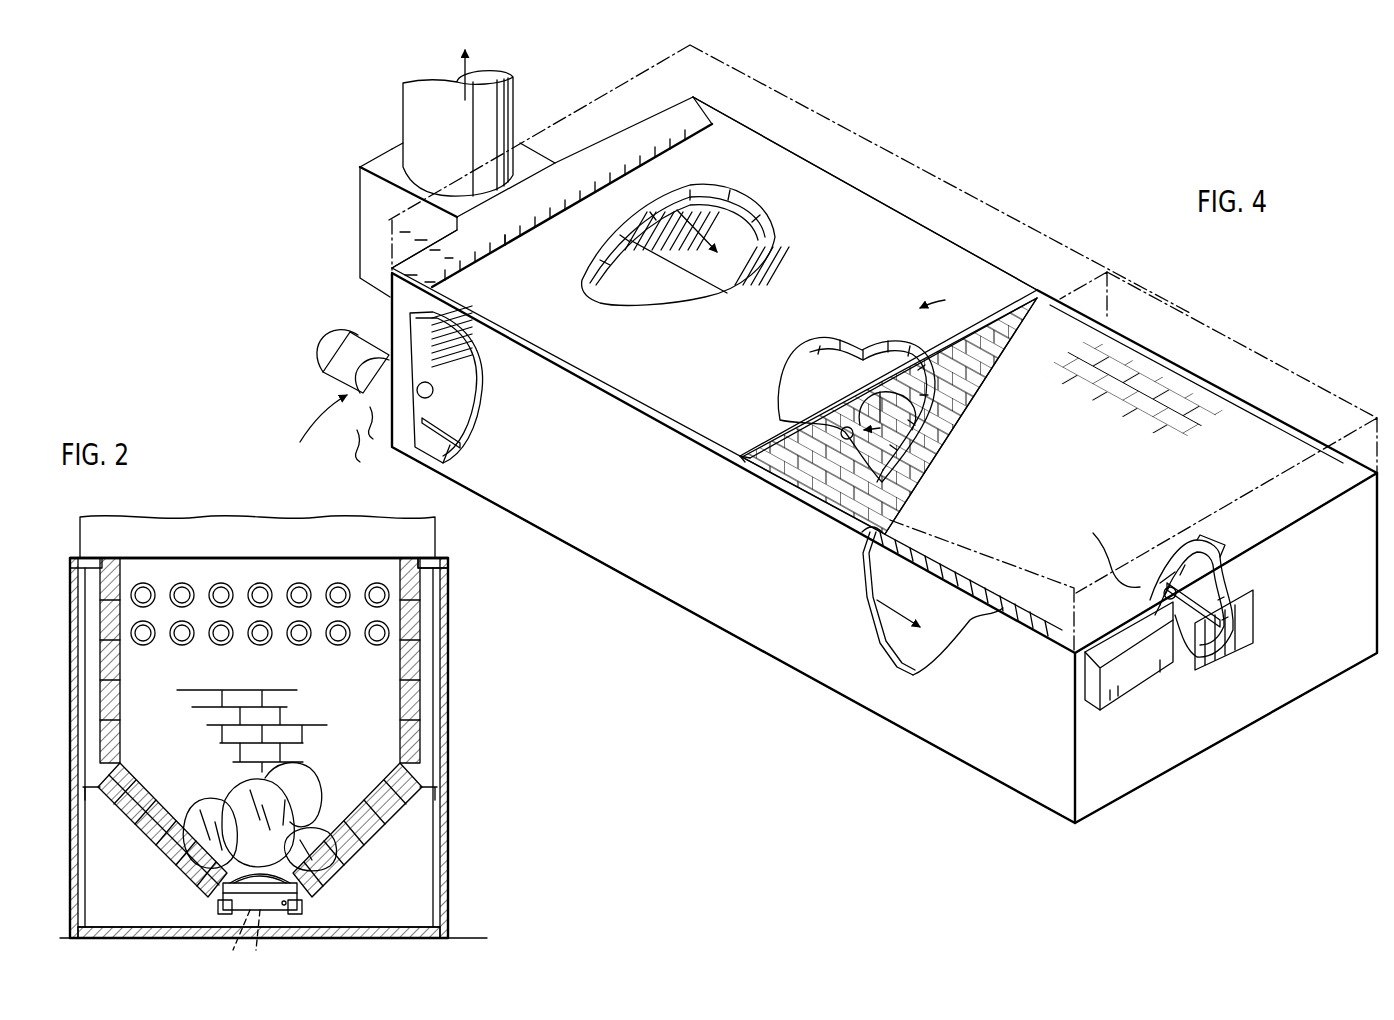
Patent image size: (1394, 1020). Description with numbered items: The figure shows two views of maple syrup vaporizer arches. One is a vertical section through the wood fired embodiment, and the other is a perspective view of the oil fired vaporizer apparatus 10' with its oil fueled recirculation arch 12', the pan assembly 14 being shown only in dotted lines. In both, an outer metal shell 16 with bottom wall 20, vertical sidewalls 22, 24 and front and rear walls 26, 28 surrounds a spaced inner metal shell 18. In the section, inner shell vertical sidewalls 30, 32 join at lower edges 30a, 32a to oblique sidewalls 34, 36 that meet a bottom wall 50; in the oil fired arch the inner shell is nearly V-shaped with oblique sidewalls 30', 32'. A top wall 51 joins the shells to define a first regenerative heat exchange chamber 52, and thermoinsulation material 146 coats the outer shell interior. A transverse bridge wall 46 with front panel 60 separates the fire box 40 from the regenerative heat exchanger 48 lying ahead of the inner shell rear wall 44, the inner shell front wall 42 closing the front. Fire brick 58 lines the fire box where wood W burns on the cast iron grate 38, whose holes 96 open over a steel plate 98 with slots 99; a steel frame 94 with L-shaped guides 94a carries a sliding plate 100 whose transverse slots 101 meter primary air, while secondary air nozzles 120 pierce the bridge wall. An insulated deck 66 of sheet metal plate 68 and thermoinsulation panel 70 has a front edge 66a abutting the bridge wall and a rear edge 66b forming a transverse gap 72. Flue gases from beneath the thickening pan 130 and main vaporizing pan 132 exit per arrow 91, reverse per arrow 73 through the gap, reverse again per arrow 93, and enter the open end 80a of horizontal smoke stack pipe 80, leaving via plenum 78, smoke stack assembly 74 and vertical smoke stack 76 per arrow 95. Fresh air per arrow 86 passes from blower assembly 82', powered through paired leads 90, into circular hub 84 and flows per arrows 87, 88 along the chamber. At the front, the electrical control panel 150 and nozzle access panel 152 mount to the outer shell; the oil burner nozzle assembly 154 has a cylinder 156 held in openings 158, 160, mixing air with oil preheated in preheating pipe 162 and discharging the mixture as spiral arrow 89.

In FIG. 4, the maple syrup vaporizer apparatus 10' is at (764, 496).
In FIG. 4, the oil fueled recirculation arch 12' is at (1226, 503).
In FIG. 2, the pan assembly 14 is at (200, 506).
In FIG. 4, the pan assembly 14 is at (1032, 224).
In FIG. 2, the outer metal shell 16 is at (466, 726).
In FIG. 2, the inner metal shell 18 is at (126, 833).
In FIG. 2, the bottom wall 20 is at (448, 932).
In FIG. 2, the vertical sidewall 22 is at (72, 640).
In FIG. 4, the vertical sidewall 22 is at (950, 743).
In FIG. 2, the vertical sidewall 24 is at (448, 672).
In FIG. 4, the vertical sidewall 24 is at (1378, 480).
In FIG. 4, the front wall 26 is at (1283, 680).
In FIG. 4, the rear wall 28 is at (452, 348).
In FIG. 2, the vertical sidewall 30 is at (83, 660).
In FIG. 2, the lower edge 30a is at (84, 789).
In FIG. 4, the oblique sidewall 30' is at (727, 452).
In FIG. 2, the vertical sidewall 32 is at (443, 660).
In FIG. 2, the lower edge 32a is at (440, 790).
In FIG. 4, the oblique sidewall 32' is at (1242, 349).
In FIG. 2, the oblique sidewall 34 is at (160, 845).
In FIG. 2, the oblique sidewall 36 is at (390, 815).
In FIG. 2, the cast iron grate 38 is at (315, 835).
In FIG. 2, the fire box 40 is at (322, 684).
In FIG. 4, the fire box 40 is at (1021, 474).
In FIG. 4, the inner shell front wall 42 is at (1222, 544).
In FIG. 4, the inner shell rear wall 44 is at (742, 119).
In FIG. 2, the bridge wall 46 is at (305, 555).
In FIG. 4, the bridge wall 46 is at (1044, 288).
In FIG. 4, the regenerative heat exchanger 48 is at (703, 280).
In FIG. 2, the bottom wall 50 is at (305, 900).
In FIG. 2, the top wall 51 is at (436, 563).
In FIG. 4, the top wall 51 is at (697, 112).
In FIG. 2, the first regenerative heat exchange chamber 52 is at (403, 869).
In FIG. 4, the first regenerative heat exchange chamber 52 is at (921, 612).
In FIG. 2, the fire brick 58 is at (122, 745).
In FIG. 4, the front panel 60 is at (1004, 292).
In FIG. 4, the insulated deck 66 is at (912, 244).
In FIG. 4, the front edge 66a is at (745, 452).
In FIG. 4, the rear edge 66b is at (524, 248).
In FIG. 4, the sheet metal plate 68 is at (776, 246).
In FIG. 4, the thermoinsulation material panel 70 is at (793, 244).
In FIG. 4, the transverse gap 72 is at (603, 188).
In FIG. 4, the reverse arrow 73 is at (700, 225).
In FIG. 4, the smoke stack assembly 74 is at (391, 131).
In FIG. 4, the vertical smoke stack 76 is at (498, 112).
In FIG. 4, the plenum 78 is at (362, 205).
In FIG. 4, the horizontal smoke stack pipe 80 is at (631, 280).
In FIG. 4, the open end 80a is at (870, 415).
In FIG. 4, the blower assembly 82' is at (353, 334).
In FIG. 4, the circular hub 84 is at (434, 389).
In FIG. 4, the fresh air arrow 86 is at (323, 417).
In FIG. 4, the air flow arrow 87 is at (467, 430).
In FIG. 4, the air flow arrow 88 is at (865, 630).
In FIG. 4, the spiral arrow 89 is at (1070, 528).
In FIG. 4, the paired leads 90 is at (372, 438).
In FIG. 4, the flue gas arrow 91 is at (941, 300).
In FIG. 4, the flow reversal arrow 93 is at (874, 392).
In FIG. 2, the steel frame 94 is at (310, 882).
In FIG. 2, the L-shaped guides 94a is at (300, 910).
In FIG. 4, the discharge arrow 95 is at (470, 64).
In FIG. 2, the holes 96 is at (225, 835).
In FIG. 2, the steel plate 98 is at (222, 898).
In FIG. 2, the slots 99 is at (230, 938).
In FIG. 2, the sliding plate 100 is at (218, 908).
In FIG. 2, the transverse slots 101 is at (257, 938).
In FIG. 2, the secondary air nozzles 120 is at (262, 584).
In FIG. 2, the thickening pan 130 is at (142, 514).
In FIG. 4, the thickening pan 130 is at (1220, 331).
In FIG. 4, the main vaporizing pan 132 is at (898, 155).
In FIG. 2, the thermoinsulation material 146 is at (440, 762).
In FIG. 4, the electrical control panel 150 is at (1125, 680).
In FIG. 4, the nozzle access panel 152 is at (1222, 654).
In FIG. 4, the oil burner nozzle assembly 154 is at (1157, 566).
In FIG. 4, the cylinder 156 is at (1228, 577).
In FIG. 4, the cylindrical opening 158 is at (1237, 585).
In FIG. 4, the cylindrical opening 160 is at (1168, 577).
In FIG. 4, the preheating pipe 162 is at (452, 446).
In FIG. 2, the wood W is at (300, 790).